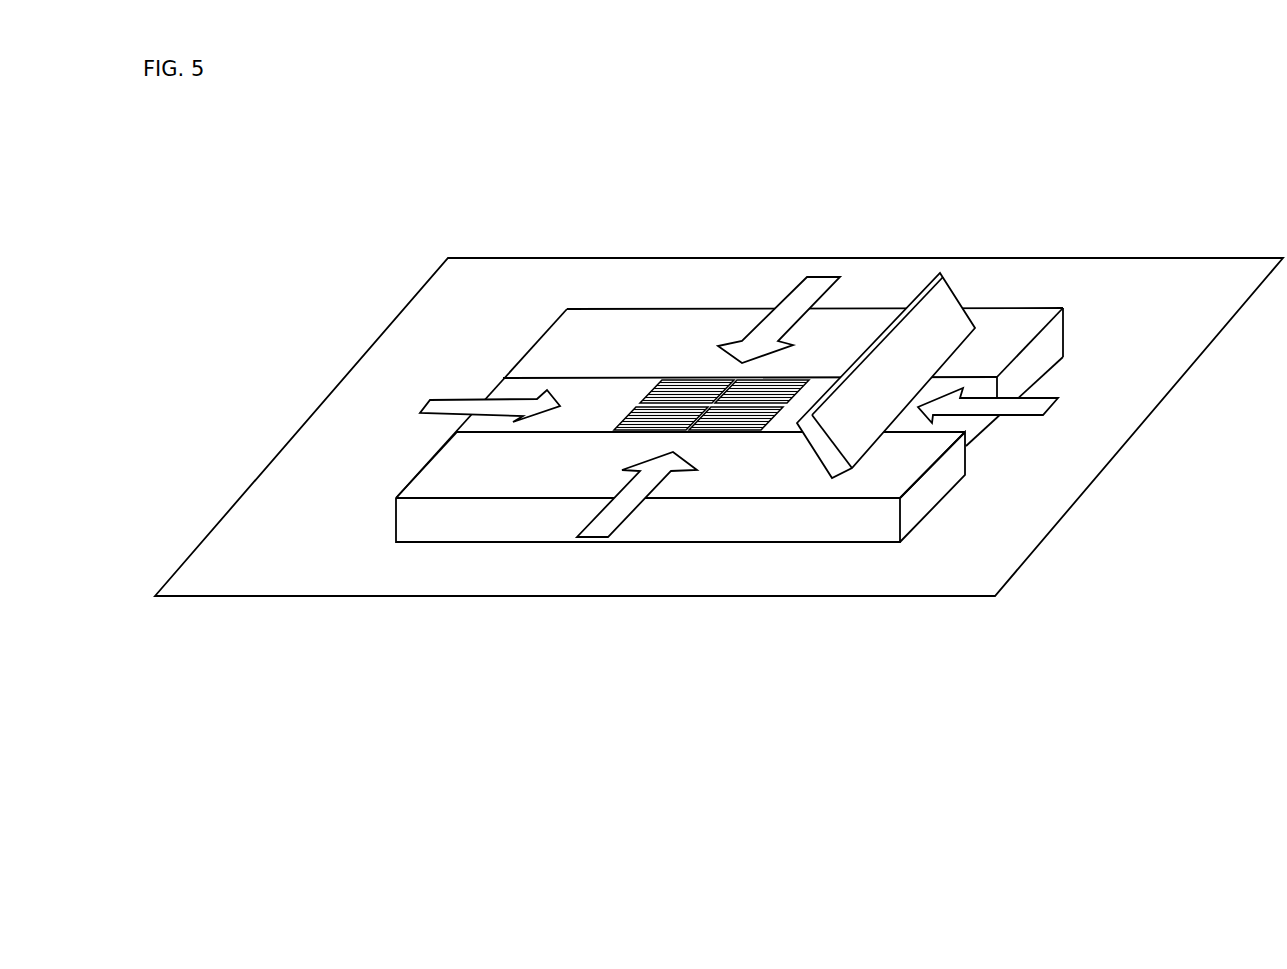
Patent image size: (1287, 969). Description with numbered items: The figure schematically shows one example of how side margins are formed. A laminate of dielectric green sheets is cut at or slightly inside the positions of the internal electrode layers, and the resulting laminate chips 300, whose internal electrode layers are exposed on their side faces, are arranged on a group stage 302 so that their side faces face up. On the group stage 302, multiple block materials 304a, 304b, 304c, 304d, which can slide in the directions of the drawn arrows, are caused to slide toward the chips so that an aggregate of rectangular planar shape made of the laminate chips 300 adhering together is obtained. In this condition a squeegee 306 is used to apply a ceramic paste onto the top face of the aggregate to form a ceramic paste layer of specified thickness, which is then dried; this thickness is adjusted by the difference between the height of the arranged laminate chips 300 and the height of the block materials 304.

The laminate chip 300 is at (670, 372).
The group stage 302 is at (262, 543).
The block material 304 is at (1017, 325).
The block material 304a is at (577, 385).
The block material 304b is at (683, 325).
The block material 304c is at (970, 428).
The block material 304d is at (764, 473).
The squeegee 306 is at (943, 305).